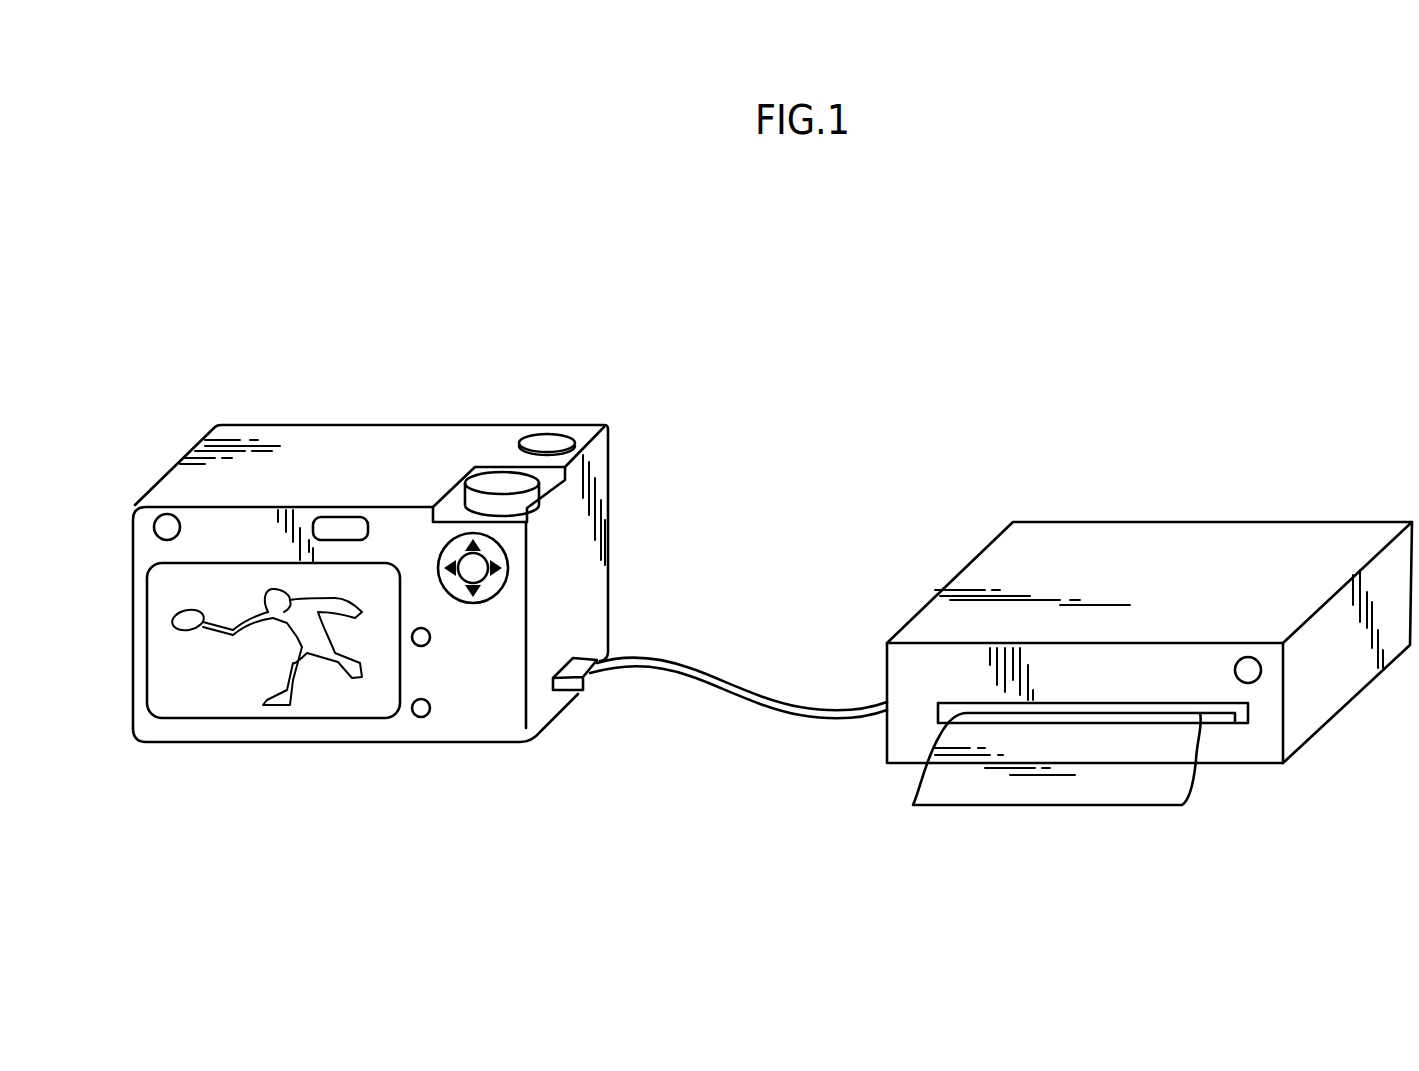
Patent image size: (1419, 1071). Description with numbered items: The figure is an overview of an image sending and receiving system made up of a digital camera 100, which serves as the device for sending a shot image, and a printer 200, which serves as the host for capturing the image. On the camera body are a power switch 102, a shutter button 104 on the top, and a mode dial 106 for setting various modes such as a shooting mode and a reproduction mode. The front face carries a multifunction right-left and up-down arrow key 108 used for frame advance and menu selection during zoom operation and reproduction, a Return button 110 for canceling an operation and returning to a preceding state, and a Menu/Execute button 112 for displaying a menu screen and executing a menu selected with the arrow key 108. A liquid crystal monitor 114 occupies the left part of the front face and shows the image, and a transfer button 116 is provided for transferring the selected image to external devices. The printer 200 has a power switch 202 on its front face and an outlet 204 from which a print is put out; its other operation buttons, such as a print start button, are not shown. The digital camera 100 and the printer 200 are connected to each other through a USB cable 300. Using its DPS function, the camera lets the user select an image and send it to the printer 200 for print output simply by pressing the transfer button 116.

The digital camera 100 is at (503, 382).
The power switch 102 is at (342, 517).
The shutter button 104 is at (548, 436).
The mode dial 106 is at (535, 500).
The arrow key 108 is at (508, 563).
The Return button 110 is at (430, 637).
The Menu/Execute button 112 is at (422, 717).
The liquid crystal monitor 114 is at (300, 718).
The transfer button 116 is at (167, 514).
The printer 200 is at (1190, 430).
The power switch 202 is at (1252, 657).
The outlet 204 is at (1233, 712).
The USB cable 300 is at (708, 686).